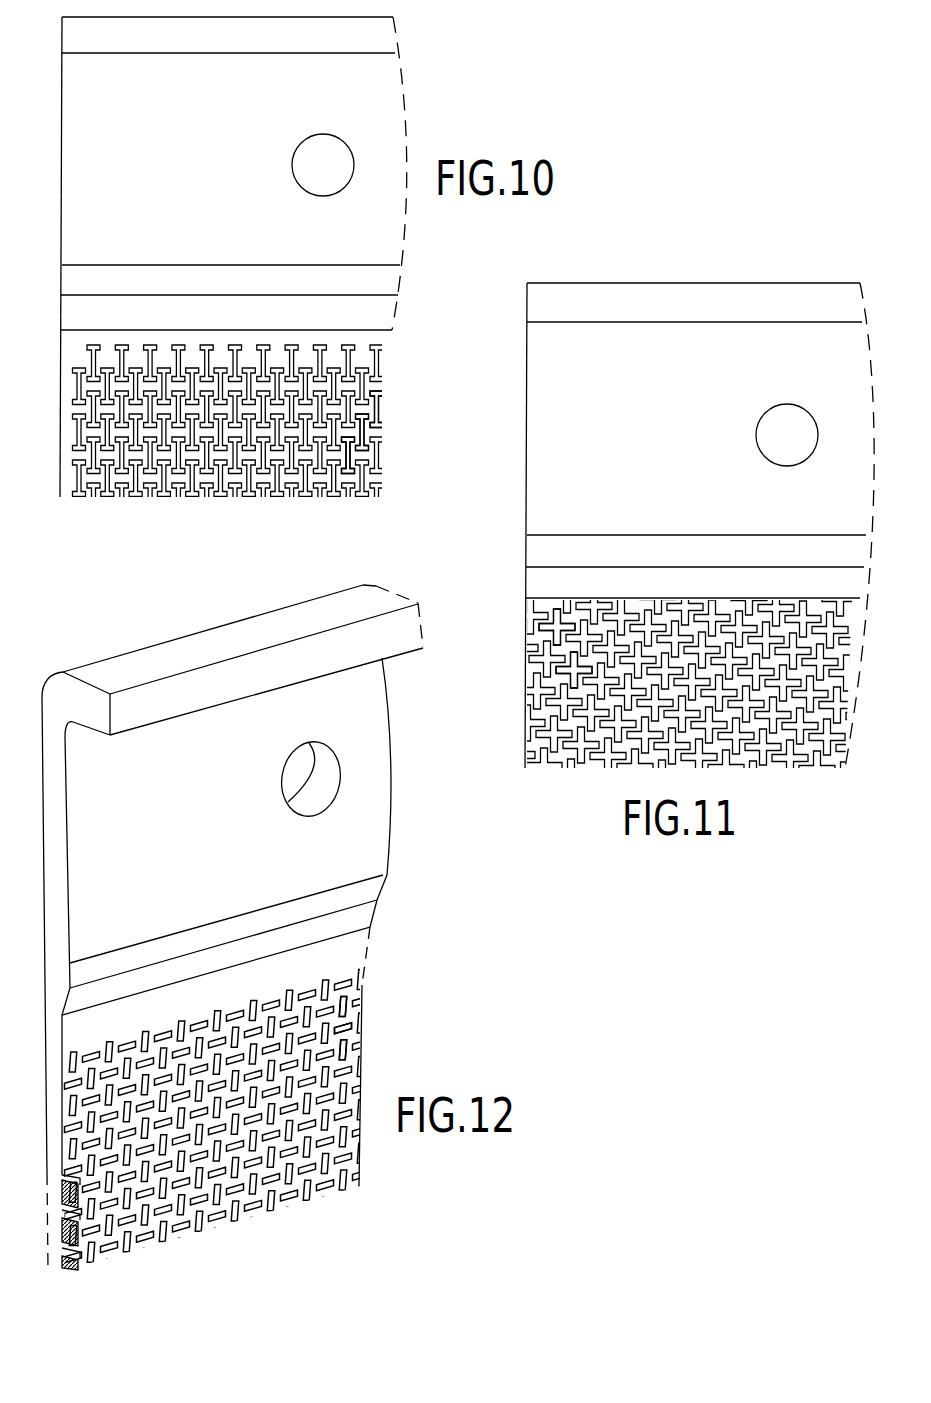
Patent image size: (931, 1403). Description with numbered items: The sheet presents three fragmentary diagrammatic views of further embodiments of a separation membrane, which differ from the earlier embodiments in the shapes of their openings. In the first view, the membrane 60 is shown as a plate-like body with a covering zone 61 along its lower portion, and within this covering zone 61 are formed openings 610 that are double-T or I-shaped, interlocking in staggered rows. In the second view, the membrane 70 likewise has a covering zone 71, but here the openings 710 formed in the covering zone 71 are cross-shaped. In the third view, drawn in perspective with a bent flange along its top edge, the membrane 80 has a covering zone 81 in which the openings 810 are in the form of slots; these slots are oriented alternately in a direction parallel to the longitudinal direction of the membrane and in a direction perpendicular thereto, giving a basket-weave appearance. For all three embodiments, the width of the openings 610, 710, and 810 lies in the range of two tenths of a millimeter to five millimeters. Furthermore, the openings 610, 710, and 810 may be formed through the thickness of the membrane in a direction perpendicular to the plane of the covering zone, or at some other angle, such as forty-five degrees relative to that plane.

In FIG. 10, the membrane 60 is at (408, 100).
In FIG. 10, the covering zone 61 is at (378, 335).
In FIG. 10, the openings 610 is at (360, 457).
In FIG. 11, the membrane 70 is at (645, 282).
In FIG. 11, the covering zone 71 is at (537, 723).
In FIG. 11, the openings 710 is at (570, 652).
In FIG. 12, the membrane 80 is at (108, 650).
In FIG. 12, the covering zone 81 is at (347, 958).
In FIG. 12, the openings 810 is at (342, 1006).